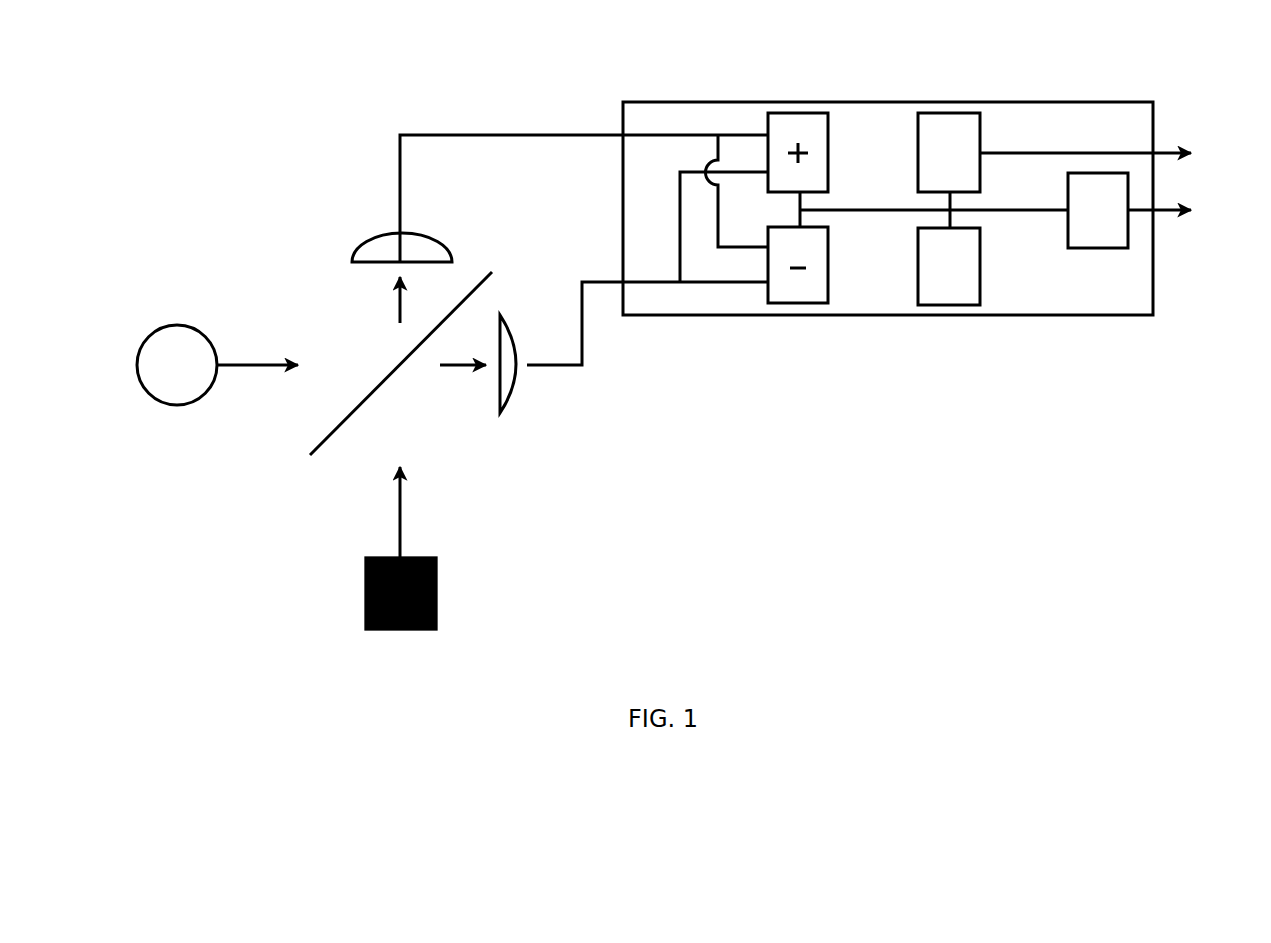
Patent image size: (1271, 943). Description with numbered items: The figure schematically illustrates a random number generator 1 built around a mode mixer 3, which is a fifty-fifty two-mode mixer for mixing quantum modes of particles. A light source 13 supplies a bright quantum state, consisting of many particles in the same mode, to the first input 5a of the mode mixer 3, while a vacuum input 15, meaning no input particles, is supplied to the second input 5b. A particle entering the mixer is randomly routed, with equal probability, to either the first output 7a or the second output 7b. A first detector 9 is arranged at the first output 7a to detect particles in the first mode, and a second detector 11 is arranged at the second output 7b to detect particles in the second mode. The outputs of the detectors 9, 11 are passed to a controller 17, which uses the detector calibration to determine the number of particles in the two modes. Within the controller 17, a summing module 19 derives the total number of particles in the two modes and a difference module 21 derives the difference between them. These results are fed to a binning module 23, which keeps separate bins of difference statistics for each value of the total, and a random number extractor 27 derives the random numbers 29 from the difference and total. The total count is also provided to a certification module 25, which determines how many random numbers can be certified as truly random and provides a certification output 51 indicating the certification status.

The random number generator 1 is at (310, 110).
The mode mixer 3 is at (330, 433).
The first input 5a is at (255, 368).
The second input 5b is at (398, 517).
The first output 7a is at (397, 298).
The second output 7b is at (463, 368).
The first detector 9 is at (383, 238).
The second detector 11 is at (527, 388).
The light source 13 is at (190, 323).
The vacuum input 15 is at (437, 605).
The controller 17 is at (1042, 102).
The summing module 19 is at (790, 112).
The difference module 21 is at (810, 303).
The binning module 23 is at (950, 305).
The certification module 25 is at (940, 112).
The random number extractor 27 is at (1097, 248).
The random numbers 29 is at (1163, 213).
The certification output 51 is at (1170, 148).